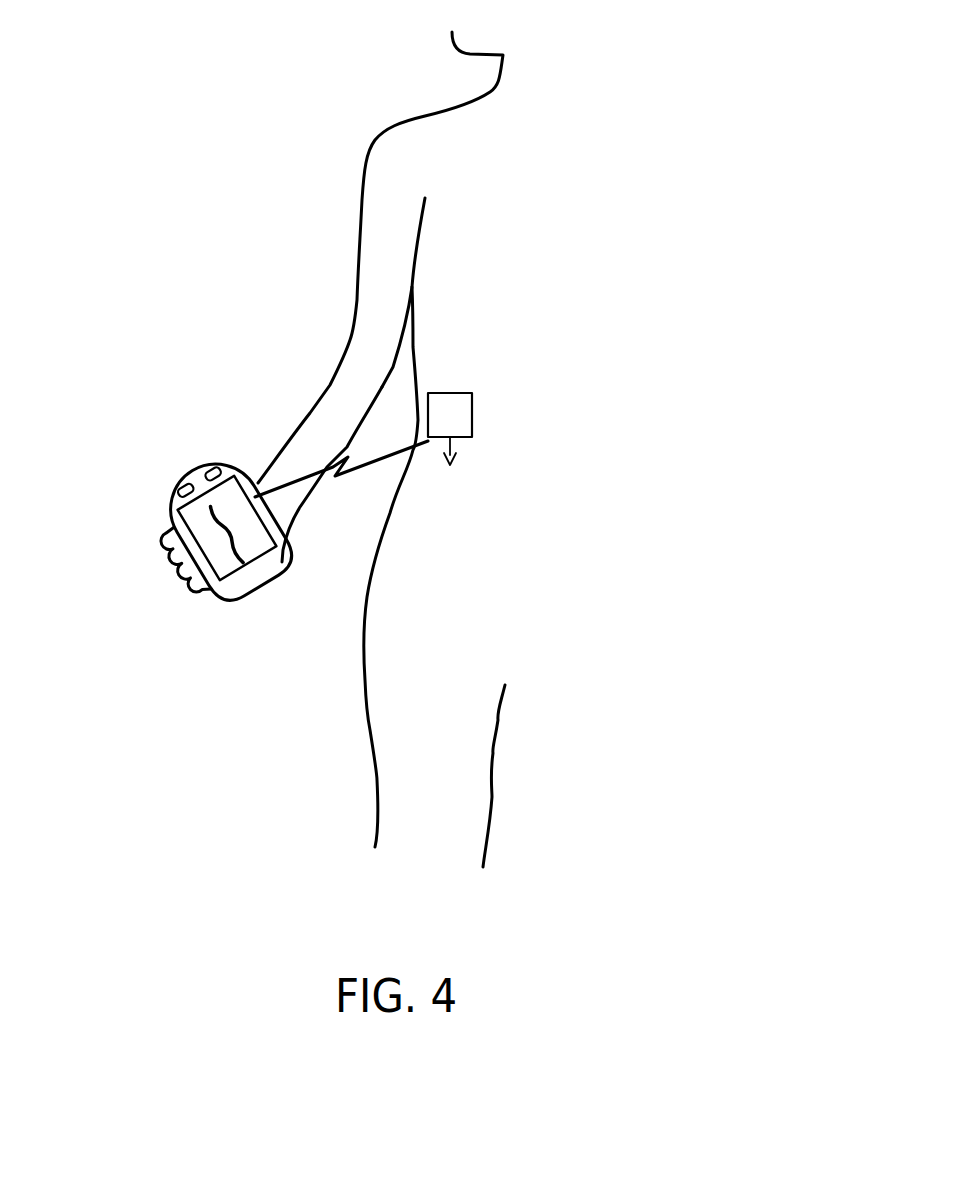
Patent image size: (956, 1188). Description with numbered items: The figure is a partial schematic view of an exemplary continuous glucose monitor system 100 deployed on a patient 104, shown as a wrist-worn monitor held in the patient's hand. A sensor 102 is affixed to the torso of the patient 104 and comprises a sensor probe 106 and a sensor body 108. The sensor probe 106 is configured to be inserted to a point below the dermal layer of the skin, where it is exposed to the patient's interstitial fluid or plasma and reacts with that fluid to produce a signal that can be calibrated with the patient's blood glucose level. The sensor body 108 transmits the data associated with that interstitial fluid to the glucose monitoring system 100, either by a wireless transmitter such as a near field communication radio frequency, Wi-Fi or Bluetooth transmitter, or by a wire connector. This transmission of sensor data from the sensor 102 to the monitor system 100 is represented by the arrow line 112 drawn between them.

The CGM system 100 is at (163, 513).
The sensor 102 is at (499, 364).
The patient 104 is at (376, 109).
The sensor probe 106 is at (450, 467).
The sensor body 108 is at (472, 425).
The arrow line 112 is at (308, 475).